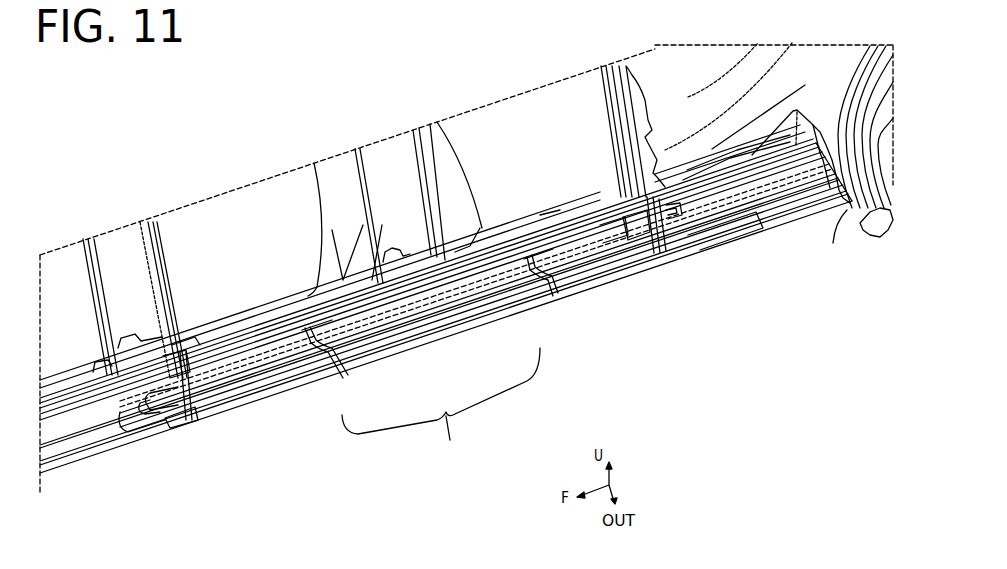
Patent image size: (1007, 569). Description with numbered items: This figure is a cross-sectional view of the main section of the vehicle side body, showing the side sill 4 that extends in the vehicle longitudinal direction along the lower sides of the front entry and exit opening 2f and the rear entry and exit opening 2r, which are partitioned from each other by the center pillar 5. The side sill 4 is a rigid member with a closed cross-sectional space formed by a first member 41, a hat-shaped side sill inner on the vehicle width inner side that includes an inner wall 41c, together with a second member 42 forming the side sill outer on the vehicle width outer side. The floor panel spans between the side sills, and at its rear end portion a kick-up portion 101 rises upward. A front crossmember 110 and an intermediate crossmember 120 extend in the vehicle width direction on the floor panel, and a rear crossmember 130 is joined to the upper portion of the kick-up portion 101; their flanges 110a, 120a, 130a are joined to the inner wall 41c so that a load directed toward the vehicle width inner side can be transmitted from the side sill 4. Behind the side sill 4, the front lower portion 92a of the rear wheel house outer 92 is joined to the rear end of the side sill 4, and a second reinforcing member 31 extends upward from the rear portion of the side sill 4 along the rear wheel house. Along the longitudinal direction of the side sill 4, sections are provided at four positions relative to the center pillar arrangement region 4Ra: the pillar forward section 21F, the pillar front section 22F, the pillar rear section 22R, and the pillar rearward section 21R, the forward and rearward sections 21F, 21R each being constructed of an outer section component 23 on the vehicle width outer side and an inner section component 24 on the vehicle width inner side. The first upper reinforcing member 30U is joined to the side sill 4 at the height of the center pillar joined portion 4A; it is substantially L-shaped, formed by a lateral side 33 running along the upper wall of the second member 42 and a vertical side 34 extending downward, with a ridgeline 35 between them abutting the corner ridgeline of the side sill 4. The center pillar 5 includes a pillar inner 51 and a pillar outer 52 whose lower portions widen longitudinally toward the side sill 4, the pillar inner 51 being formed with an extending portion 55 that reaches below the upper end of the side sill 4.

The front entry and exit opening 2f is at (347, 272).
The rear entry and exit opening 2r is at (702, 115).
The side sill 4 is at (264, 304).
The center pillar joined portion 4A is at (316, 264).
The center pillar arrangement region 4Ra is at (441, 407).
The center pillar 5 is at (453, 153).
The pillar forward section 21F is at (186, 429).
The pillar rearward section 21R is at (636, 265).
The pillar front section 22F is at (338, 372).
The pillar rear section 22R is at (548, 303).
The outer section component 23 is at (190, 414).
The inner section component 24 is at (200, 347).
The first upper reinforcing member 30U is at (753, 230).
The second reinforcing member 31 is at (805, 115).
The lateral side 33 is at (260, 377).
The vertical side 34 is at (244, 401).
The ridgeline 35 is at (298, 375).
The first member 41 is at (66, 375).
The inner wall 41c is at (557, 212).
The second member 42 is at (93, 456).
The pillar inner 51 is at (398, 350).
The pillar outer 52 is at (467, 198).
The extending portion 55 is at (470, 340).
The rear wheel house outer 92 is at (880, 193).
The front lower portion 92a is at (841, 239).
The kick-up portion 101 is at (605, 131).
The front crossmember 110 is at (163, 266).
The flange 110a is at (192, 335).
The intermediate crossmember 120 is at (361, 198).
The flange 120a is at (485, 229).
The rear crossmember 130 is at (655, 130).
The flange 130a is at (693, 171).